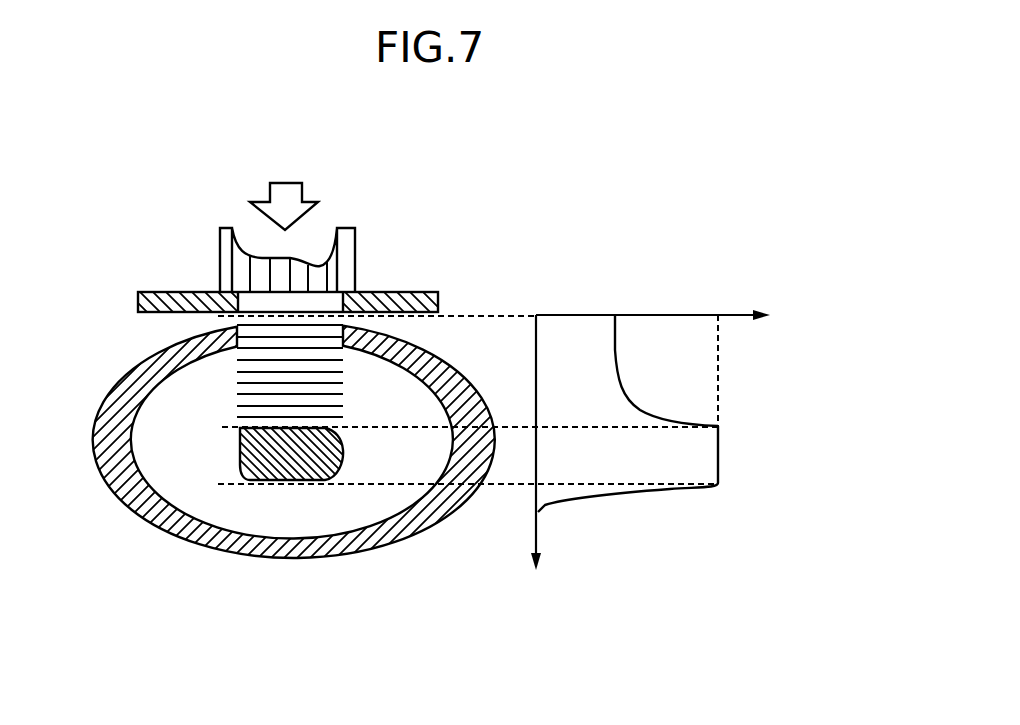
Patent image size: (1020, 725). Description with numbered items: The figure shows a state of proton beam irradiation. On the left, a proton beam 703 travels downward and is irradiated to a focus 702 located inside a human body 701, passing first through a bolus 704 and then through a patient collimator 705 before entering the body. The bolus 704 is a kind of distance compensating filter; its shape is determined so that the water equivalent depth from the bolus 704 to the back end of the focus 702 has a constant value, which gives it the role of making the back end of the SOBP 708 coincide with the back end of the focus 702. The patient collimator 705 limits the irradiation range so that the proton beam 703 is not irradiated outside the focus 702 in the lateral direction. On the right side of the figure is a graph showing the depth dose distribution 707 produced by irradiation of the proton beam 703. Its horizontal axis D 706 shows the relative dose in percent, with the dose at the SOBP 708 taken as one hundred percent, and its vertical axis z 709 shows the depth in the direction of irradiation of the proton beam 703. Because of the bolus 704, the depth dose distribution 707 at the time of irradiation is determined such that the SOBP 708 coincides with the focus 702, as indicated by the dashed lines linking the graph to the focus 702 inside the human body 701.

The human body 701 is at (198, 537).
The focus 702 is at (340, 440).
The proton beam 703 is at (292, 196).
The bolus 704 is at (355, 228).
The patient collimator 705 is at (430, 291).
The horizontal axis D 706 is at (756, 268).
The depth dose distribution 707 is at (632, 403).
The SOBP 708 is at (718, 456).
The vertical axis z 709 is at (508, 568).